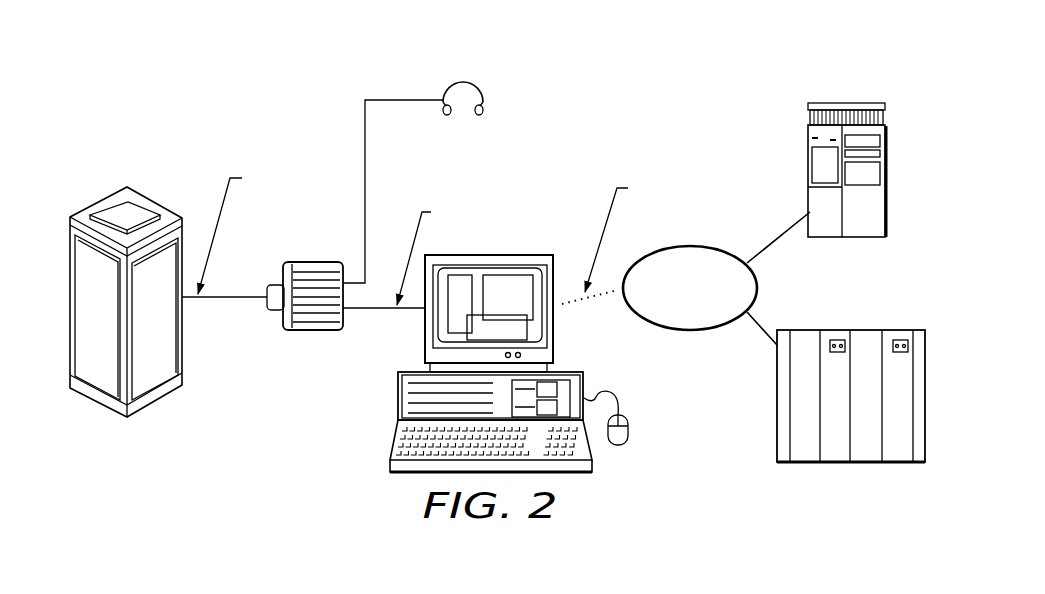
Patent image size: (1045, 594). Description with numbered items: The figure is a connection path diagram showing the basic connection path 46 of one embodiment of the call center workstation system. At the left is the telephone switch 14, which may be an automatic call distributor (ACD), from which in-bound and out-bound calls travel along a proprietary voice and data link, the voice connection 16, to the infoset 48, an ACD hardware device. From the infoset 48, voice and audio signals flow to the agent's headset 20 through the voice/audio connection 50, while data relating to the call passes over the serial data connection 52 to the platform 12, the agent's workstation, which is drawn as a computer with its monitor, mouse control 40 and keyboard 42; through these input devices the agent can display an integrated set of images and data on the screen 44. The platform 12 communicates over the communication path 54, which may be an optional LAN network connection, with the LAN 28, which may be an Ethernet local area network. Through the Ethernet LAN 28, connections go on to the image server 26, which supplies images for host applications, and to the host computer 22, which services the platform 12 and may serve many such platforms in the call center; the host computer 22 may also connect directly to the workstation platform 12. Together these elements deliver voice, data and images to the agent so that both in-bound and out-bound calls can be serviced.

The platform 12 is at (550, 156).
The telephone switch 14 is at (150, 195).
The voice connection 16 is at (223, 300).
The headset 20 is at (478, 76).
The host computer 22 is at (777, 400).
The image server 26 is at (847, 102).
The local area network connection 28 is at (690, 331).
The mouse control 40 is at (630, 433).
The keyboard 42 is at (593, 461).
The screen 44 is at (562, 245).
The basic connection path 46 is at (650, 74).
The infoset 48 is at (283, 271).
The connection 50 is at (365, 160).
The serial data connection 52 is at (385, 310).
The communication path 54 is at (613, 299).